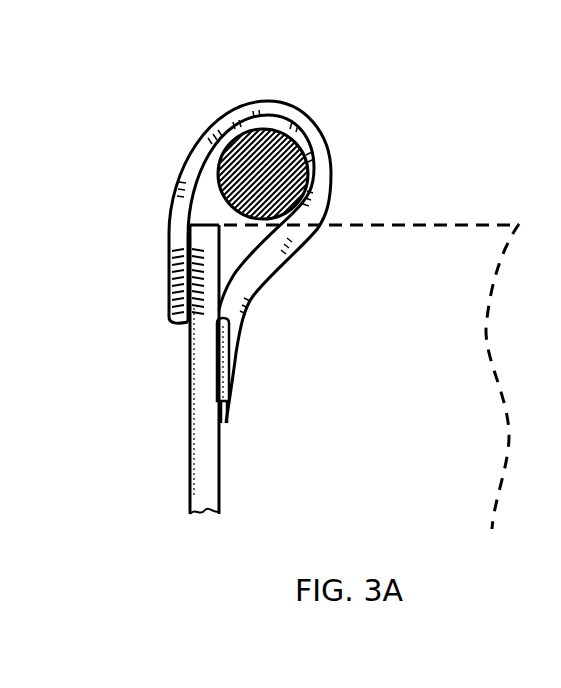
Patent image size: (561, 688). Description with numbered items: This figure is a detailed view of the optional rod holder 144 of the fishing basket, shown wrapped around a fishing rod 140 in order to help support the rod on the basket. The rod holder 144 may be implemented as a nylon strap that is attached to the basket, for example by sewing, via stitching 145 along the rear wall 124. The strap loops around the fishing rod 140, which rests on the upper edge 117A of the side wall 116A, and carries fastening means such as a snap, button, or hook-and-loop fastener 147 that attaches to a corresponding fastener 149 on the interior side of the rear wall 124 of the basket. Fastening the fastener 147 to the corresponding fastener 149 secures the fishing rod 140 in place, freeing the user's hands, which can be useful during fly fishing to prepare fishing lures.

The rod holder 144 is at (212, 111).
The fishing rod 140 is at (289, 137).
The stitching 145 is at (160, 263).
The corresponding fastener 149 is at (204, 361).
The fastener 147 is at (226, 351).
The rear wall 124 is at (194, 434).
The upper edge 117A is at (444, 219).
The side wall 116A is at (416, 368).